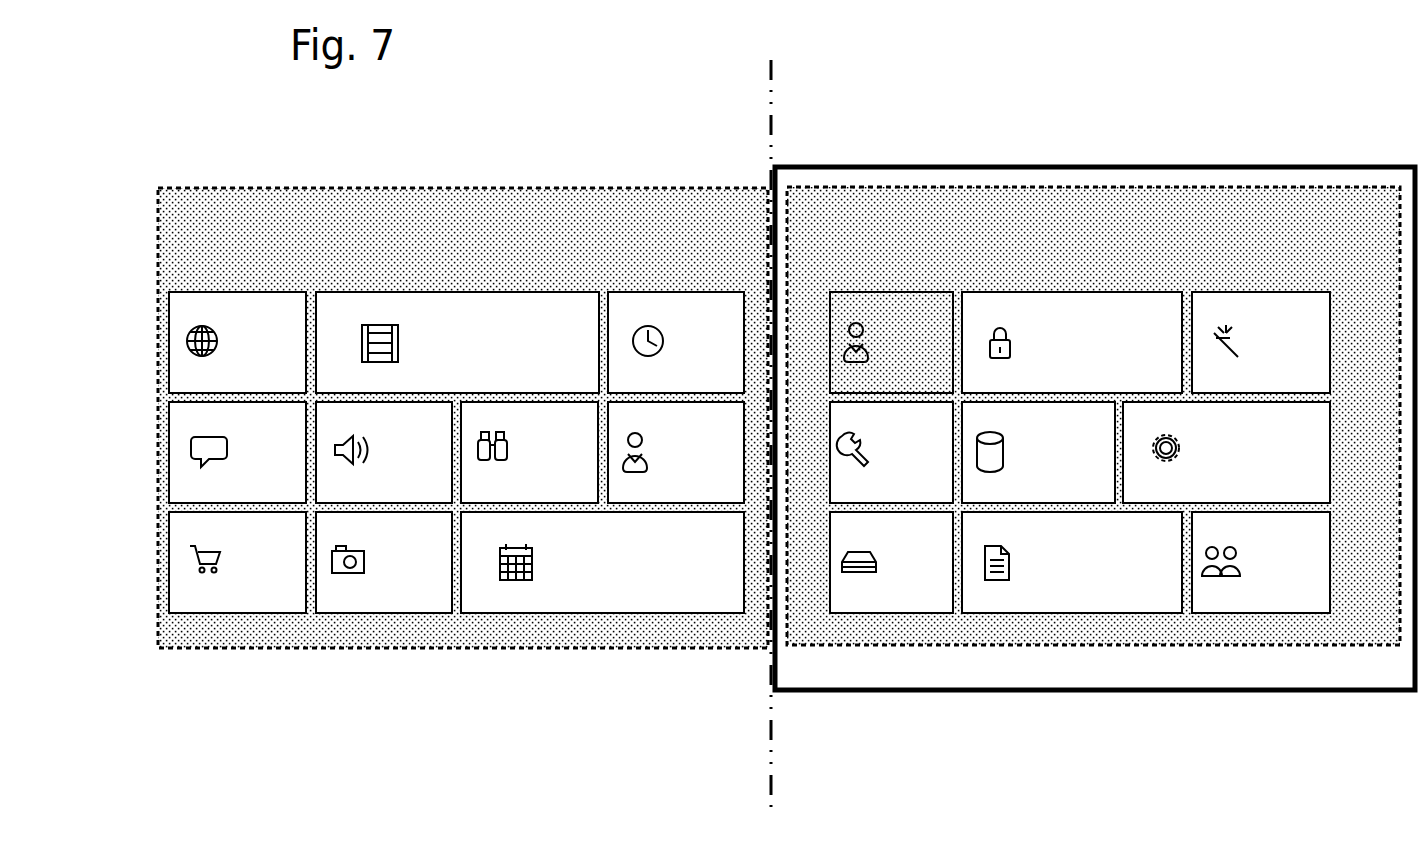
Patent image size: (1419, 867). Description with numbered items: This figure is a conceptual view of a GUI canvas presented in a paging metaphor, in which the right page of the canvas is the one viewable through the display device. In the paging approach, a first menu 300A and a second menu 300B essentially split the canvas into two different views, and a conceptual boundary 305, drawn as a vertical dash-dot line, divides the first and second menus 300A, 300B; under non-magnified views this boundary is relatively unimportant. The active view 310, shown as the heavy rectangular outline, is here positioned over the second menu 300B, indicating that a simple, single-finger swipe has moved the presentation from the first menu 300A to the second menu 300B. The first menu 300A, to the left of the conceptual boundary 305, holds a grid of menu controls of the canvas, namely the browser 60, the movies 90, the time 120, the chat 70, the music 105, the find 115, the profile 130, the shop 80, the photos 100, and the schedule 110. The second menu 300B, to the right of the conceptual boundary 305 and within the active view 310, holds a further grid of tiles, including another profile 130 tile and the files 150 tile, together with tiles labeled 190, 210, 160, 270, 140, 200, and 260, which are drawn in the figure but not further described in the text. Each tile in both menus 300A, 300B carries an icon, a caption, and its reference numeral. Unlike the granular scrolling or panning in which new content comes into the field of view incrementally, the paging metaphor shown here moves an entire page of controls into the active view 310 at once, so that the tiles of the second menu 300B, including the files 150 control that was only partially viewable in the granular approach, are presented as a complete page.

The first menu 300A is at (188, 187).
The second menu 300B is at (840, 185).
The active view 310 is at (1118, 166).
The conceptual boundary 305 is at (771, 752).
The browser 60 is at (263, 388).
The movies 90 is at (508, 388).
The time 120 is at (677, 388).
The chat 70 is at (241, 497).
The music 105 is at (380, 497).
The find 115 is at (512, 497).
The profile 130 is at (675, 497).
The shop 80 is at (241, 607).
The photos 100 is at (380, 607).
The schedule 110 is at (624, 607).
The security settings tile 190 is at (1122, 388).
The games tile 210 is at (1257, 388).
The tools tile 160 is at (882, 497).
The my data tile 270 is at (1025, 497).
The my settings tile 140 is at (1227, 492).
The files 150 is at (887, 607).
The documents tile 200 is at (1054, 607).
The social tile 260 is at (1257, 607).